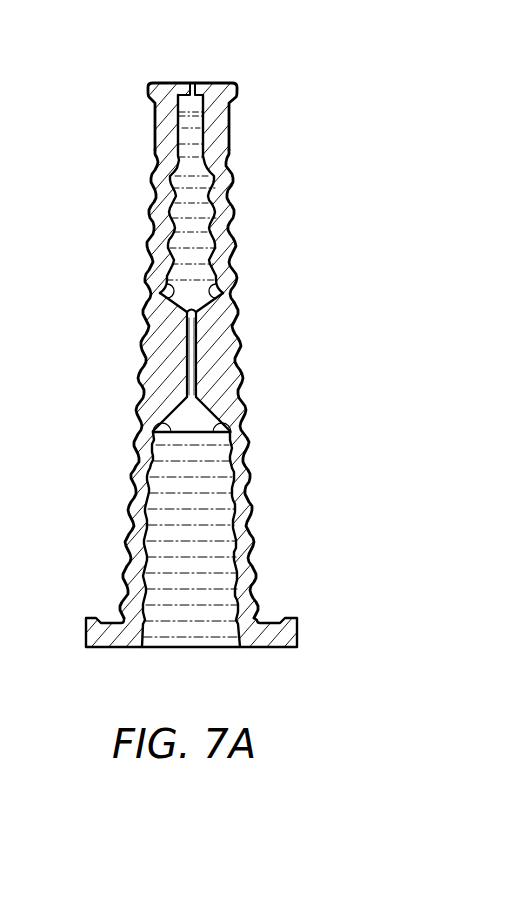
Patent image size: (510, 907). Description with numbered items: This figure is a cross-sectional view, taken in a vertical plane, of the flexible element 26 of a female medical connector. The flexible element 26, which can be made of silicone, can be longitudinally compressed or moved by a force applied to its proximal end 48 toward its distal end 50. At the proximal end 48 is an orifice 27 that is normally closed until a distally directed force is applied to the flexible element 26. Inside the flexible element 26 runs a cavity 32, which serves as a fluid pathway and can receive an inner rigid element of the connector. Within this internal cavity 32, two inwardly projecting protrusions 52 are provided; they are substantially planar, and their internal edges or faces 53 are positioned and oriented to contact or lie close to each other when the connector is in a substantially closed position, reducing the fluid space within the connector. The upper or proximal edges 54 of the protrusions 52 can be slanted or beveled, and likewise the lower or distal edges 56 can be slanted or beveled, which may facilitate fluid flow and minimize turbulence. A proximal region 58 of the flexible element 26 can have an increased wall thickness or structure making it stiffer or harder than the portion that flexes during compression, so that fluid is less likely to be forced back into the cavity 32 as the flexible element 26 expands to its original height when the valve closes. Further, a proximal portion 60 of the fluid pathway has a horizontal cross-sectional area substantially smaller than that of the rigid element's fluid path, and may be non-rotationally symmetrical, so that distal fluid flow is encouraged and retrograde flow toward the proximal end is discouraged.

The flexible element 26 is at (126, 236).
The orifice 27 is at (189, 92).
The cavity 32 is at (185, 630).
The proximal end 48 is at (172, 83).
The distal end 50 is at (268, 648).
The protrusions 52 is at (165, 358).
The internal edges or faces 53 is at (185, 378).
The upper or proximal edges 54 is at (162, 290).
The lower or distal edges 56 is at (153, 432).
The proximal region 58 is at (229, 121).
The proximal portion 60 is at (203, 94).